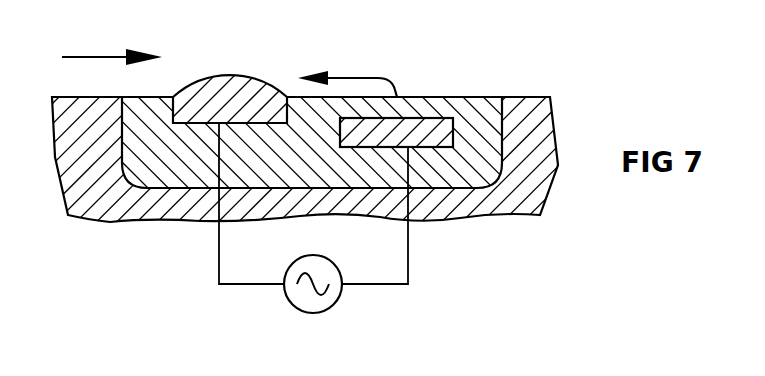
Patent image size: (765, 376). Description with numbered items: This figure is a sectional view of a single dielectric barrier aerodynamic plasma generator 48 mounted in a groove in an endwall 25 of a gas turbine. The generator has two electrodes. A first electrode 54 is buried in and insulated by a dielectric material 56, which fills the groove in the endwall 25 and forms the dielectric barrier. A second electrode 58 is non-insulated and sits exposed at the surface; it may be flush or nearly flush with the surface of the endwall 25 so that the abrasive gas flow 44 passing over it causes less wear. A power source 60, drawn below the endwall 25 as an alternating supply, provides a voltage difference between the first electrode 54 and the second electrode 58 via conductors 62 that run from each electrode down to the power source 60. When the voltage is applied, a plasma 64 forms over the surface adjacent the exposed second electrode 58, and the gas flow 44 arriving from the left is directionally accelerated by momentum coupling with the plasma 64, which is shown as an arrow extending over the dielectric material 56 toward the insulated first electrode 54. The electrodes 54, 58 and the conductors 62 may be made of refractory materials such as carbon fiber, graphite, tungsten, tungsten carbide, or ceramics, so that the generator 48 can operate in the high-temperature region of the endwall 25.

The endwall 25 is at (538, 97).
The gas flow 44 is at (94, 57).
The single dielectric barrier aerodynamic plasma generator 48 is at (471, 74).
The first electrode 54 is at (424, 130).
The dielectric material 56 is at (485, 155).
The second electrode 58 is at (213, 90).
The power source 60 is at (293, 260).
The conductors 62 is at (437, 258).
The plasma 64 is at (322, 75).